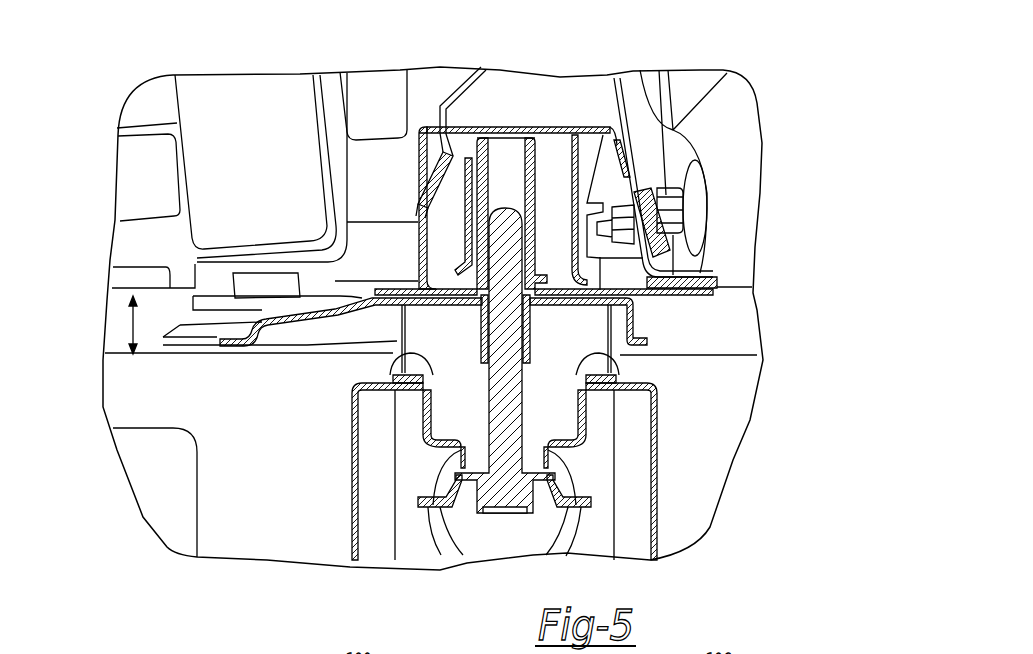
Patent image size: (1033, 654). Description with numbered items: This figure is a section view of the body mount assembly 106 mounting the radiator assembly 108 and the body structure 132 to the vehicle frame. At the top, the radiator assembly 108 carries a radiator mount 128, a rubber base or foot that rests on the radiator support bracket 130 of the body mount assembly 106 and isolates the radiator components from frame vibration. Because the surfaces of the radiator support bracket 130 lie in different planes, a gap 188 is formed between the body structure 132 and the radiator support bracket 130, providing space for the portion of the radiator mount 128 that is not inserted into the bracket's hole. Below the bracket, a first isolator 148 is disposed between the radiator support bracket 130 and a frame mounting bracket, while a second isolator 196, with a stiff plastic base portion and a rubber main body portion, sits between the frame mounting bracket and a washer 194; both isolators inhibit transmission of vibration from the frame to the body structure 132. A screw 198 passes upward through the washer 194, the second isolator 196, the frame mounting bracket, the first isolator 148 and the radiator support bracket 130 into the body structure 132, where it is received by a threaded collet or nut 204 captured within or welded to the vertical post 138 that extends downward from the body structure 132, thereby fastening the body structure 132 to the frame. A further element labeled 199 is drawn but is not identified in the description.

The body mount assembly 106 is at (655, 332).
The radiator assembly 108 is at (345, 66).
The radiator mount 128 is at (243, 352).
The radiator support bracket 130 is at (337, 337).
The body structure 132 is at (547, 76).
The vertical post 138 is at (468, 110).
The first isolator 148 is at (598, 350).
The gap 188 is at (108, 312).
The washer 194 is at (593, 503).
The second isolator 196 is at (437, 428).
The screw 198 is at (505, 227).
The lower component 199 is at (252, 653).
The nut 204 is at (482, 182).